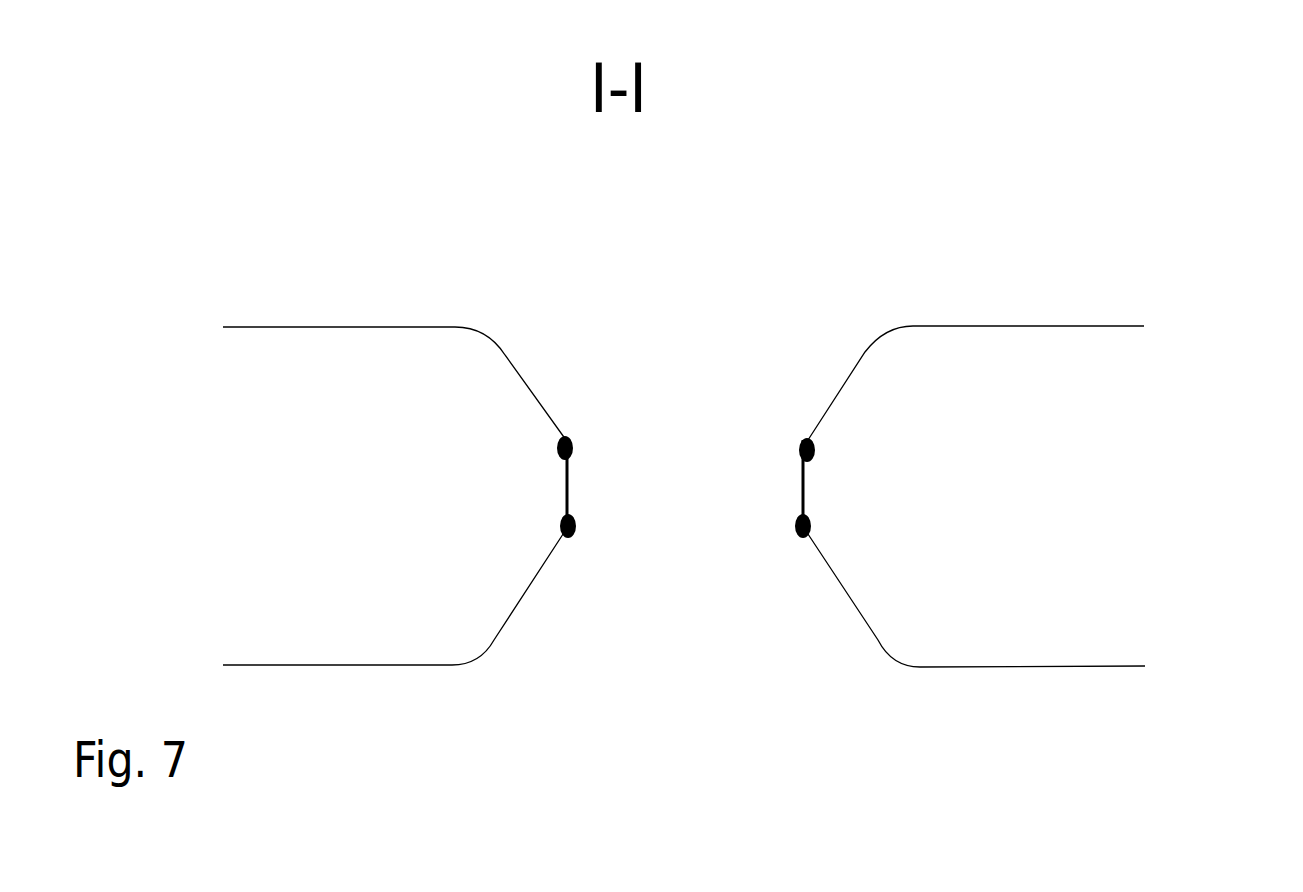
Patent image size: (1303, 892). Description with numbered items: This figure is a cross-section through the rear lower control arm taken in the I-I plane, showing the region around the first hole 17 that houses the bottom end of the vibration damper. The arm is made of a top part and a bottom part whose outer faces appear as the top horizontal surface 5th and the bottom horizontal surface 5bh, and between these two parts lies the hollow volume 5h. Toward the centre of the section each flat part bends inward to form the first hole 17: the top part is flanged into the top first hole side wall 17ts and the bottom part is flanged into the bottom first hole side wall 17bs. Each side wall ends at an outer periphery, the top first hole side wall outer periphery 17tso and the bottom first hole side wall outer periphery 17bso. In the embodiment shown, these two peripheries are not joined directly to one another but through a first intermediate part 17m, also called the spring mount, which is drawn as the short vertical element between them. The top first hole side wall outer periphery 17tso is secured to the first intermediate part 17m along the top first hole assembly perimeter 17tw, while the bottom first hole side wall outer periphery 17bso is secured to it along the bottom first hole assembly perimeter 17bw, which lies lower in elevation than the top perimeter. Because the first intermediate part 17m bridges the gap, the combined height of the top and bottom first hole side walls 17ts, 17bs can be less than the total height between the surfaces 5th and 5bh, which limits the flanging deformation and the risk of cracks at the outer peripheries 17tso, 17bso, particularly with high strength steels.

The top horizontal surface 5th is at (296, 320).
The bottom horizontal surface 5bh is at (367, 676).
The hollow volume 5h is at (270, 570).
The first hole 17 is at (858, 287).
The top first hole side wall 17ts is at (840, 390).
The bottom first hole side wall 17bs is at (837, 607).
The first intermediate part 17m is at (562, 495).
The top first hole side wall outer periphery 17tso is at (808, 444).
The bottom first hole side wall outer periphery 17bso is at (807, 533).
The top first hole assembly perimeter 17tw is at (552, 450).
The bottom first hole assembly perimeter 17bw is at (563, 532).